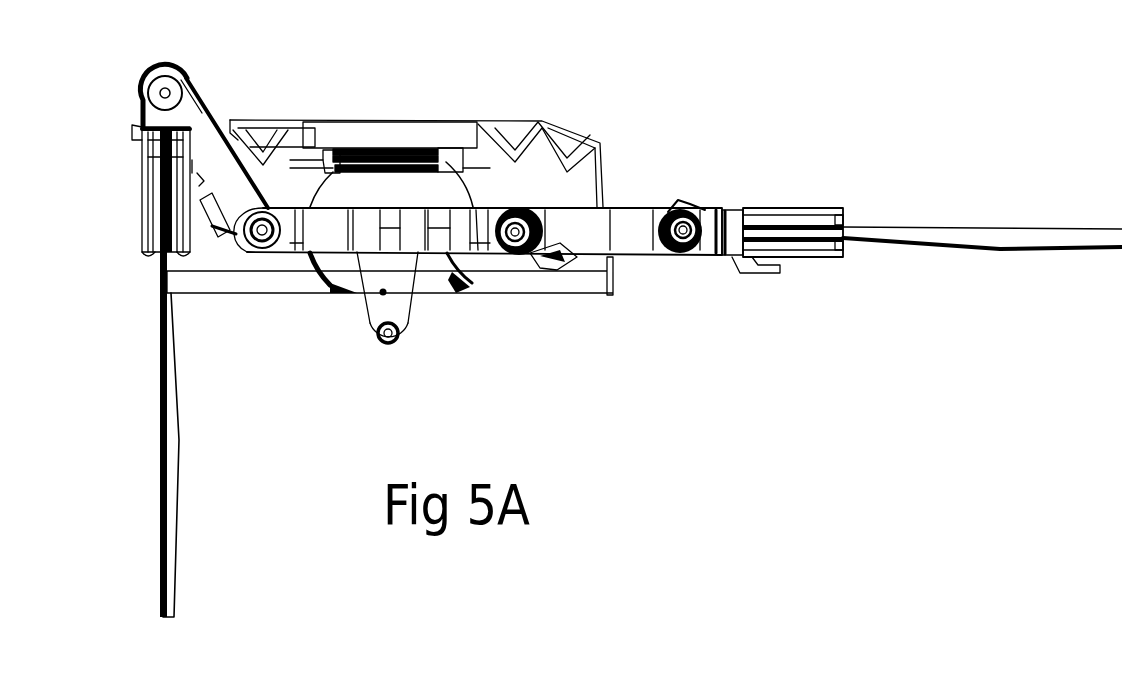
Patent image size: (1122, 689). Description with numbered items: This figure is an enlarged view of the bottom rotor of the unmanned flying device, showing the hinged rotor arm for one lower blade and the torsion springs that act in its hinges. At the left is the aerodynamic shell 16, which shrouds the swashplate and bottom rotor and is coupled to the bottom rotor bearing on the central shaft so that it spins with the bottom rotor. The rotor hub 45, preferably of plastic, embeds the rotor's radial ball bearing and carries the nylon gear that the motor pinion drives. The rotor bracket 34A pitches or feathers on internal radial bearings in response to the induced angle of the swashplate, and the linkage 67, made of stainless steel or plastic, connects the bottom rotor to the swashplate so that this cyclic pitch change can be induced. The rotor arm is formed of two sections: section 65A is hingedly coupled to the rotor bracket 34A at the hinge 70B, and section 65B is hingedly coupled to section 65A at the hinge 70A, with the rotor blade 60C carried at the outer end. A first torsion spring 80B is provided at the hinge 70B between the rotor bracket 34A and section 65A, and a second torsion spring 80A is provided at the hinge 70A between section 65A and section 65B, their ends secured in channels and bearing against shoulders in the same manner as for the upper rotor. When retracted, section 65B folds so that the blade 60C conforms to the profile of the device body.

The aerodynamic shell 16 is at (290, 185).
The rotor hub 45 is at (371, 190).
The rotor bracket 34A is at (487, 196).
The rotor arm section 65A is at (623, 196).
The first torsion spring 80B is at (540, 210).
The hinge 70B is at (512, 262).
The hinge 70A is at (680, 270).
The second torsion spring 80A is at (684, 193).
The rotor arm section 65B is at (840, 202).
The rotor blade 60C is at (1010, 270).
The linkage 67 is at (383, 292).